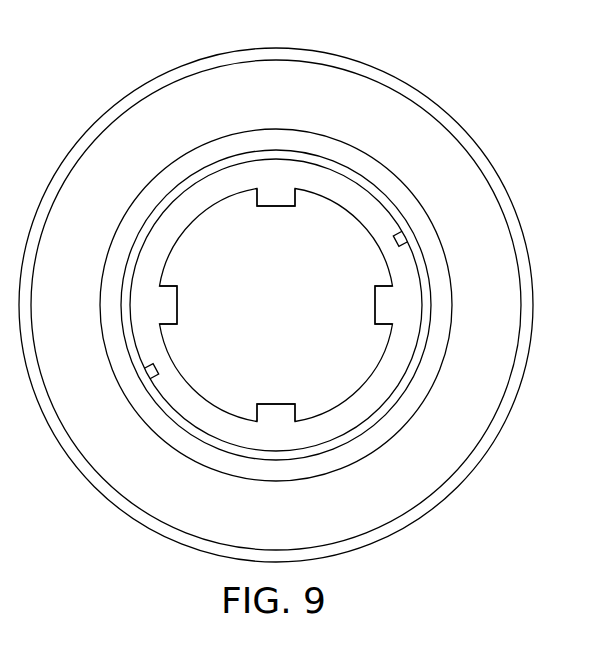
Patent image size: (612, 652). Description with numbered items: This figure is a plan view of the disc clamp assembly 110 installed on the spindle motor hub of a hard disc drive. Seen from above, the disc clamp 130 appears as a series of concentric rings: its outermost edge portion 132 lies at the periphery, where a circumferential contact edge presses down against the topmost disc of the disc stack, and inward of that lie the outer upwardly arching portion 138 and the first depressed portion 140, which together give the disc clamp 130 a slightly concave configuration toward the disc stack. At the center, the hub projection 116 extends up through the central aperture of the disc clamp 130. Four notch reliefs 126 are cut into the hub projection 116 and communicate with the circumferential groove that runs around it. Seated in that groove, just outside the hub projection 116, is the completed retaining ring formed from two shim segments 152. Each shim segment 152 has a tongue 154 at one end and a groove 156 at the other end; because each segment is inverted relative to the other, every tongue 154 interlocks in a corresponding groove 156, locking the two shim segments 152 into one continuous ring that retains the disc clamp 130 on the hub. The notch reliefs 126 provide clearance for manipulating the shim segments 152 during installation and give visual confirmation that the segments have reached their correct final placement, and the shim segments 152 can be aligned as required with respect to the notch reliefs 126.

The disc clamp assembly 110 is at (425, 55).
The hub projection 116 is at (230, 257).
The notch reliefs 126 is at (273, 202).
The disc clamp 130 is at (183, 85).
The outermost edge portion 132 is at (478, 152).
The outer upwardly arching portion 138 is at (400, 124).
The first depressed portion 140 is at (428, 228).
The shim segment 152 is at (227, 193).
The tongue 154 is at (158, 357).
The groove 156 is at (400, 240).